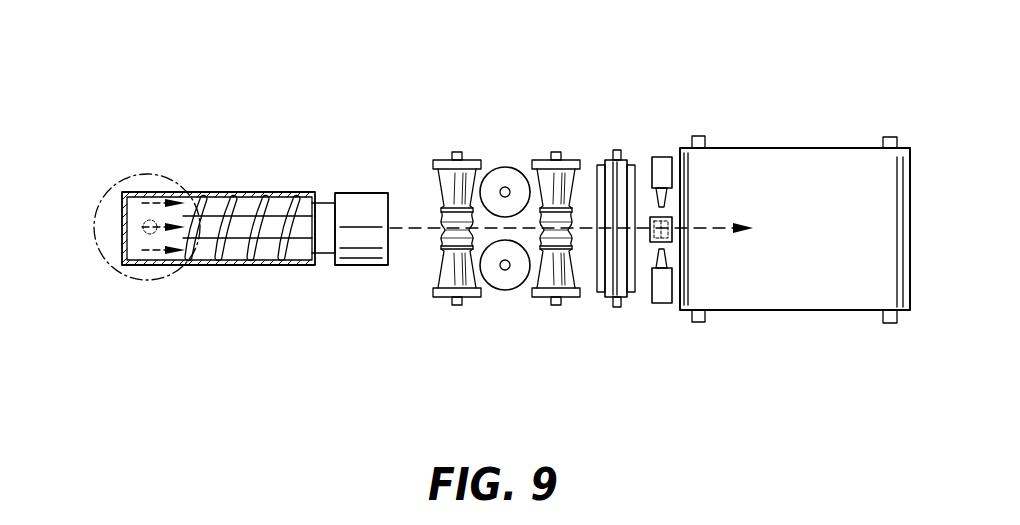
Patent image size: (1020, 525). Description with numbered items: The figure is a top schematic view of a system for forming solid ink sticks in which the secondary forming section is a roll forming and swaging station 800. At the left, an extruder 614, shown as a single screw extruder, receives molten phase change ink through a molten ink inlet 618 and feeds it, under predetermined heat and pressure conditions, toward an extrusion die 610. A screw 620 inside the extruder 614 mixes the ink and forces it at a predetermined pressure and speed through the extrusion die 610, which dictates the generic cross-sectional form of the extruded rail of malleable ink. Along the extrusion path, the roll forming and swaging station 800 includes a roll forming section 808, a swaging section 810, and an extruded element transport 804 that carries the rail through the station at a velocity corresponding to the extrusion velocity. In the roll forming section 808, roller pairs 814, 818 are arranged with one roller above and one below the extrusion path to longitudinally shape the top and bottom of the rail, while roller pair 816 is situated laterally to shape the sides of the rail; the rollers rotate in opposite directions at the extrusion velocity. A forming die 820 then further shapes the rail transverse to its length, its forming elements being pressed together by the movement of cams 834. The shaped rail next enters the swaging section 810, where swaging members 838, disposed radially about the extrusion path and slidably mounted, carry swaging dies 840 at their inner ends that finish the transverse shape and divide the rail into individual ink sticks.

The roll forming and swaging station 800 is at (489, 61).
The extruded element transport 804 is at (792, 147).
The roll forming section 808 is at (637, 378).
The swaging section 810 is at (682, 378).
The roller pair 814 is at (437, 300).
The roller pair 816 is at (510, 176).
The roller pair 818 is at (540, 298).
The forming die 820 is at (606, 130).
The cams 834 is at (608, 304).
The swaging members 838 is at (665, 157).
The swaging dies 840 is at (658, 193).
The extrusion die 610 is at (348, 193).
The extruder 614 is at (255, 192).
The molten ink inlet 618 is at (148, 172).
The screw 620 is at (222, 252).